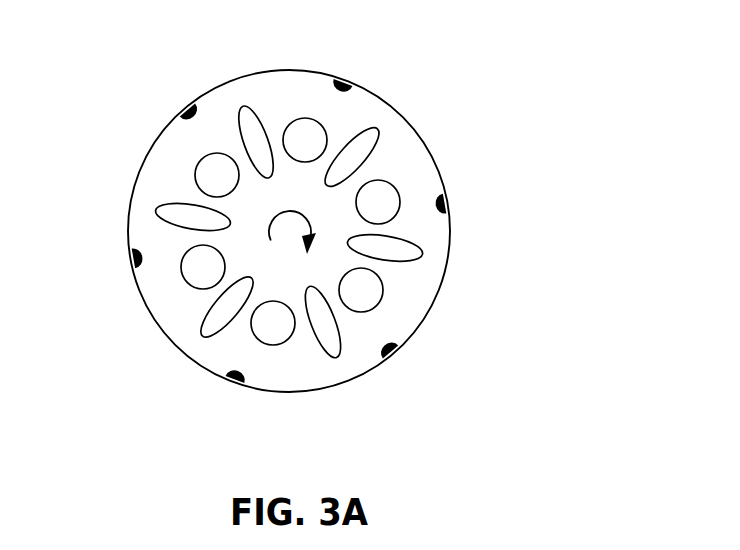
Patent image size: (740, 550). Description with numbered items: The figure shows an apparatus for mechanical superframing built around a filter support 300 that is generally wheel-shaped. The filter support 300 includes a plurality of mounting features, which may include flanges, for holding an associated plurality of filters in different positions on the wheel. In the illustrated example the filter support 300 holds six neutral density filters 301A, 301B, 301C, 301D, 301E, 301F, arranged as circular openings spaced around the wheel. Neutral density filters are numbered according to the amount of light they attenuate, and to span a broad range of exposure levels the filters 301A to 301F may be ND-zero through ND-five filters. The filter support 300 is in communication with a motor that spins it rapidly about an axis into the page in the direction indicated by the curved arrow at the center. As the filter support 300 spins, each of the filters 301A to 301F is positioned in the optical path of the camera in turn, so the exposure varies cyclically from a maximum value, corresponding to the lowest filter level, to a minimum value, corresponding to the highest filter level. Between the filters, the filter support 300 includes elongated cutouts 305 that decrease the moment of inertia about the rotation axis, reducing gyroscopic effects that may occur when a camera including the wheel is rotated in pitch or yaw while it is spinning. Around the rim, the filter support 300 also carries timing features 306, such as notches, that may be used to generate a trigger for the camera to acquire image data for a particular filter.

The filter support 300 is at (417, 126).
The neutral density filter 301A is at (304, 120).
The neutral density filter 301B is at (392, 187).
The neutral density filter 301C is at (382, 291).
The neutral density filter 301D is at (281, 338).
The neutral density filter 301E is at (181, 270).
The neutral density filter 301F is at (196, 172).
The cutout 305 is at (252, 104).
The timing feature 306 is at (186, 106).